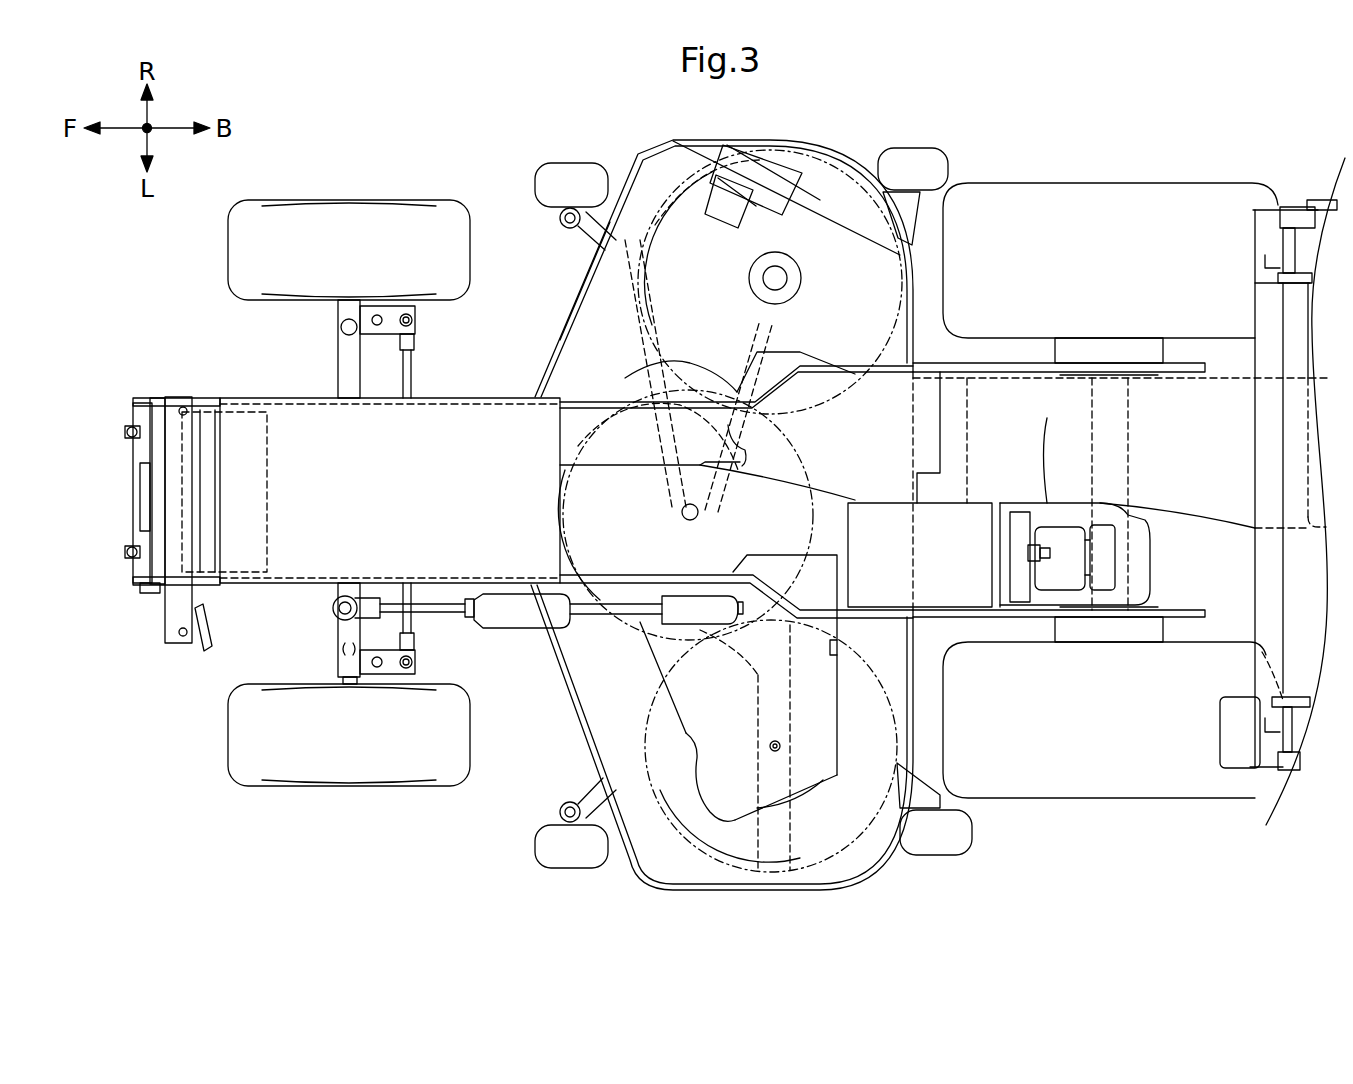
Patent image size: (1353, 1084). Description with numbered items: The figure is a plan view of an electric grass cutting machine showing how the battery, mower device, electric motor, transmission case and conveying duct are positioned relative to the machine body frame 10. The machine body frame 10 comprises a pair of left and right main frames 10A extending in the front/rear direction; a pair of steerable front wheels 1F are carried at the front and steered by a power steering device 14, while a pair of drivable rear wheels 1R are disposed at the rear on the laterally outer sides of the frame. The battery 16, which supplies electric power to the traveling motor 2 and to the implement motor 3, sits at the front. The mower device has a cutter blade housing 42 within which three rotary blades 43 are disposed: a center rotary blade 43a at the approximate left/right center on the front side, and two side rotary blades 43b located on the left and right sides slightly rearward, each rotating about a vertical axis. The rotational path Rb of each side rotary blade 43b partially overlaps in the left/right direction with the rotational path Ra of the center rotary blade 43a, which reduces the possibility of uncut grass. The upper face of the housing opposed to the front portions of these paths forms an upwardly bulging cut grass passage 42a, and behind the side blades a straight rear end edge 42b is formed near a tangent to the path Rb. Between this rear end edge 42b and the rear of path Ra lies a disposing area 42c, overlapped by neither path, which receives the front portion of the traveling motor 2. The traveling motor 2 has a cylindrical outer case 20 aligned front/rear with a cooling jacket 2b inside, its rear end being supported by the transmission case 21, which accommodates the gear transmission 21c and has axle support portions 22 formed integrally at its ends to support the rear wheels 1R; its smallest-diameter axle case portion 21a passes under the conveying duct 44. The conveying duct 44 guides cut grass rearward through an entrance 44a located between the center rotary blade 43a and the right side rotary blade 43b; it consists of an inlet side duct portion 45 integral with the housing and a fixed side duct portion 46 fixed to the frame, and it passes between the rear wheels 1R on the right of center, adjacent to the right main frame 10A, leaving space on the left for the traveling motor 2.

The front wheel 1F is at (356, 210).
The rear wheel 1R is at (1113, 207).
The traveling motor 2 is at (1089, 529).
The cooling jacket 2b is at (942, 595).
The implement motor 3 is at (267, 500).
The machine body frame 10 is at (532, 490).
The main frame 10A is at (486, 400).
The power steering device 14 is at (520, 620).
The battery 16 is at (299, 430).
The outer case 20 is at (950, 520).
The transmission case 21 is at (1127, 494).
The axle case portion 21a is at (1128, 465).
The gear transmission 21c is at (1143, 558).
The axle support portion 22 is at (1120, 347).
The cutter blade housing 42 is at (754, 533).
The cut grass passage 42a is at (590, 305).
The rear end edge 42b is at (942, 300).
The disposing area 42c is at (848, 532).
The rotary blade 43 is at (730, 535).
The center rotary blade 43a is at (672, 545).
The side rotary blade 43b is at (828, 190).
The conveying duct 44 is at (853, 505).
The entrance 44a is at (668, 366).
The inlet side duct portion 45 is at (736, 698).
The fixed side duct portion 46 is at (1050, 420).
The rotational path of the center rotary blade Ra is at (580, 445).
The rotational path of the side rotary blade Rb is at (655, 225).